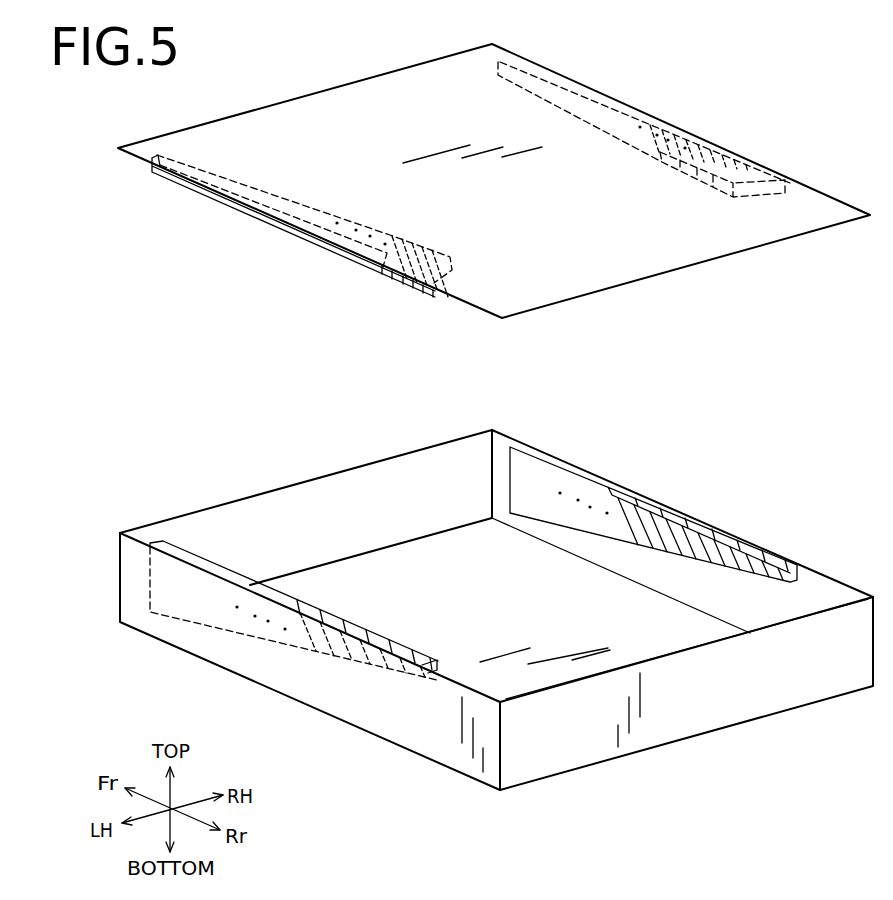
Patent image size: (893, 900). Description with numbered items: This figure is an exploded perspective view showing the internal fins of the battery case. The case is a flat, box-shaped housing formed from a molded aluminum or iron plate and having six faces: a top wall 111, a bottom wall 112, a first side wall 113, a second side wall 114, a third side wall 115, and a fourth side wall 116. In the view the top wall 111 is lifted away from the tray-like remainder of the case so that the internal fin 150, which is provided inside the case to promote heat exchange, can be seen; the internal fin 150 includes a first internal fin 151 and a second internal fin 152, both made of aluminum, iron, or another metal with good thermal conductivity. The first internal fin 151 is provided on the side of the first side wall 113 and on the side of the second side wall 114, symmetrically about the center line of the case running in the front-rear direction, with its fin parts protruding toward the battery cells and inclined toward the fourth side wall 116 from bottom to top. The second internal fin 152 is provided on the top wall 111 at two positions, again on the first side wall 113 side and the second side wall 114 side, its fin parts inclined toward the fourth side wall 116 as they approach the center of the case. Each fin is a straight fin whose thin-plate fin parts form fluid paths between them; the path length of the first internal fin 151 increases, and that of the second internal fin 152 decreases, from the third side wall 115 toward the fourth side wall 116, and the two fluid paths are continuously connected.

The top wall 111 is at (333, 105).
The bottom wall 112 is at (488, 608).
The first side wall 113 is at (300, 675).
The second side wall 114 is at (512, 433).
The third side wall 115 is at (668, 717).
The fourth side wall 116 is at (287, 487).
The internal fin 150 is at (473, 369).
The first internal fin 151 is at (315, 609).
The second internal fin 152 is at (648, 117).